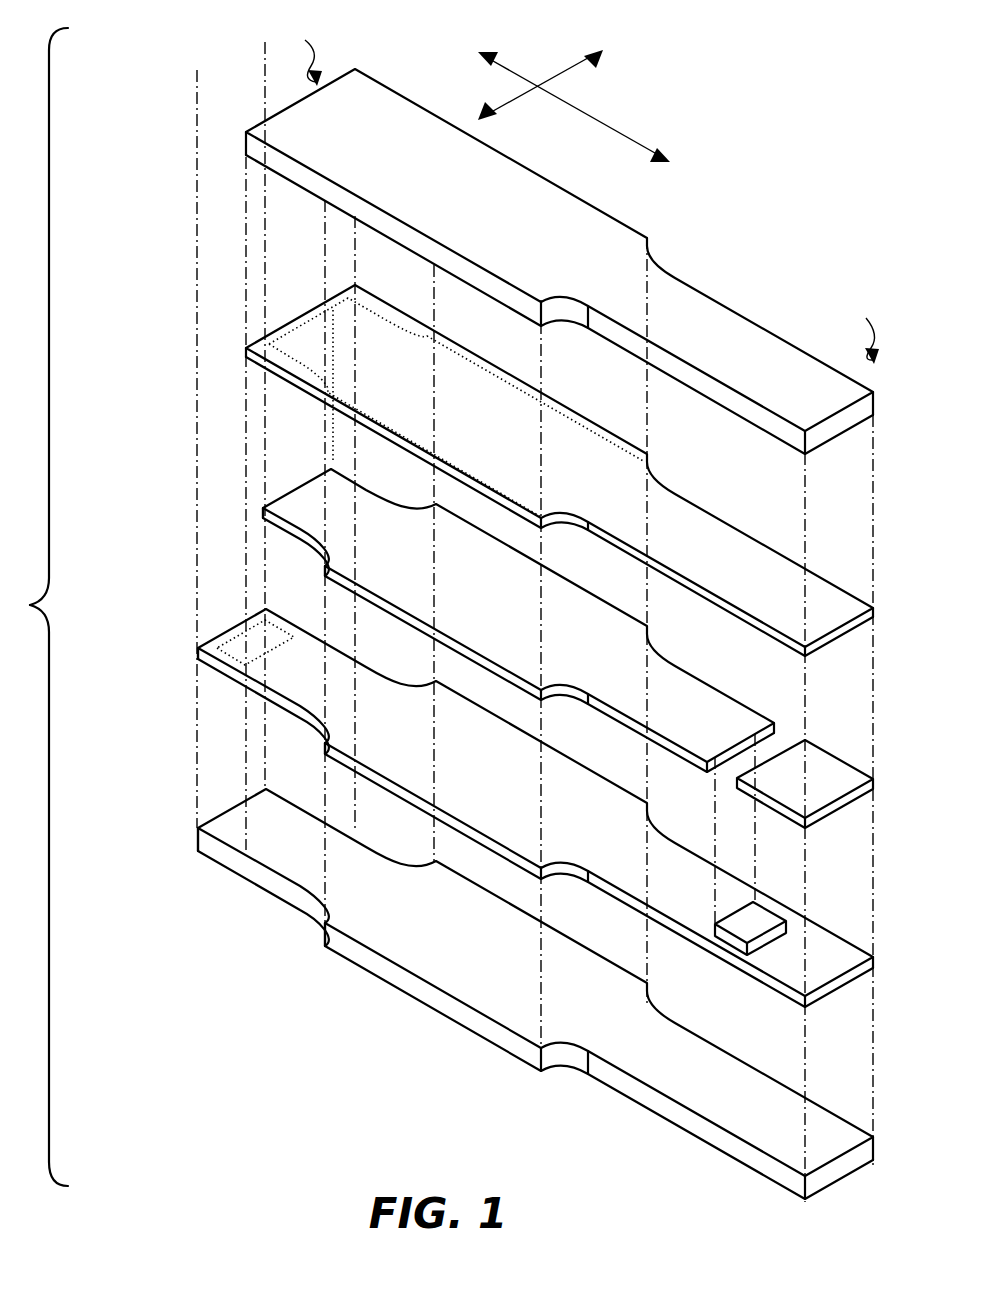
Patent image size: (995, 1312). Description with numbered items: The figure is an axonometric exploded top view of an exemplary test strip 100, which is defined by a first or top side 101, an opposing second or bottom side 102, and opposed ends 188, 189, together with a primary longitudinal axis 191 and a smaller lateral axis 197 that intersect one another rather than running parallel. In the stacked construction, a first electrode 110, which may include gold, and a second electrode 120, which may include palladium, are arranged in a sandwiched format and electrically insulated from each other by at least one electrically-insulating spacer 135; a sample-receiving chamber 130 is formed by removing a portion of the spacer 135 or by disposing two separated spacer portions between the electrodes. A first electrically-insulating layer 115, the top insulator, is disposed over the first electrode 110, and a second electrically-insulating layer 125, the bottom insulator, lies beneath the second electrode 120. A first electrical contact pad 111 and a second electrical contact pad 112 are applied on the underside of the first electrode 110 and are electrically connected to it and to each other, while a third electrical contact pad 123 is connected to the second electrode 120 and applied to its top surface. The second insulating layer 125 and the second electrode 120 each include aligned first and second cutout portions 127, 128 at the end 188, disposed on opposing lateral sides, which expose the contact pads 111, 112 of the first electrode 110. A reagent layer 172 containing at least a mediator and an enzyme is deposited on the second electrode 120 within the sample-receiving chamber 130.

The test strip 100 is at (789, 259).
The first or top side 101 is at (180, 93).
The second or bottom side 102 is at (180, 865).
The first electrode 110 is at (559, 458).
The first electrical contact pad 111 is at (305, 397).
The second electrical contact pad 112 is at (420, 337).
The first electrically-insulating layer 115 is at (709, 299).
The second electrode 120 is at (596, 777).
The third electrical contact pad 123 is at (216, 646).
The second electrically-insulating layer 125 is at (709, 1049).
The first cutout portion 127 is at (272, 569).
The second cutout portion 128 is at (374, 484).
The sample-receiving chamber 130 is at (789, 732).
The electrically-insulating spacer 135 is at (709, 678).
The reagent layer 172 is at (714, 927).
The end 188 is at (308, 46).
The end 189 is at (870, 324).
The primary longitudinal axis 191 is at (618, 128).
The lateral axis 197 is at (568, 68).